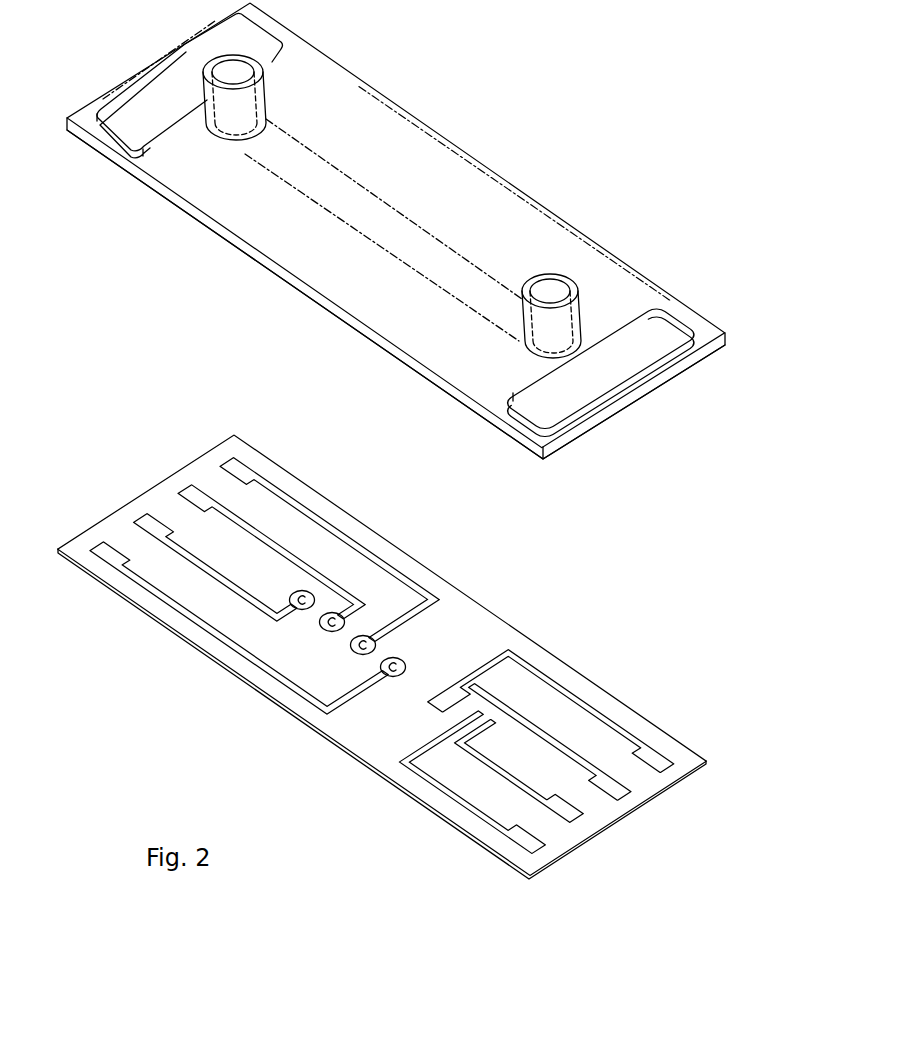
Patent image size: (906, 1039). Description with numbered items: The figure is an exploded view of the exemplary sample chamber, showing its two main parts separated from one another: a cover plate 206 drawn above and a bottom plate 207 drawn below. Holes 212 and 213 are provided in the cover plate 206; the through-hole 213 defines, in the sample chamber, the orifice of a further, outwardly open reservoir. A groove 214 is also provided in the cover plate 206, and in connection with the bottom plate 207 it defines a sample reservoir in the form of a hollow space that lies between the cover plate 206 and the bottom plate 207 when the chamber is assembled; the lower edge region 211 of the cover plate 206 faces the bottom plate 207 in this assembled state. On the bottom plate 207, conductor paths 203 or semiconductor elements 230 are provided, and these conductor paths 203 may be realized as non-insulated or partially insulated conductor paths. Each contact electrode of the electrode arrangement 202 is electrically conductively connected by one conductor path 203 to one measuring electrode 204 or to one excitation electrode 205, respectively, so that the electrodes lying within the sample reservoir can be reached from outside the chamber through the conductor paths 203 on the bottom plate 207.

The electrodes 202 is at (150, 518).
The conductor path 203 is at (377, 550).
The measuring electrode 204 is at (403, 660).
The excitation electrode 205 is at (476, 687).
The cover plate 206 is at (203, 185).
The bottom plate 207 is at (215, 662).
The cover plate edge 211 is at (590, 425).
The hole 212 is at (645, 340).
The through-hole 213 is at (551, 292).
The groove 214 is at (338, 165).
The semiconductor element 230 is at (380, 567).